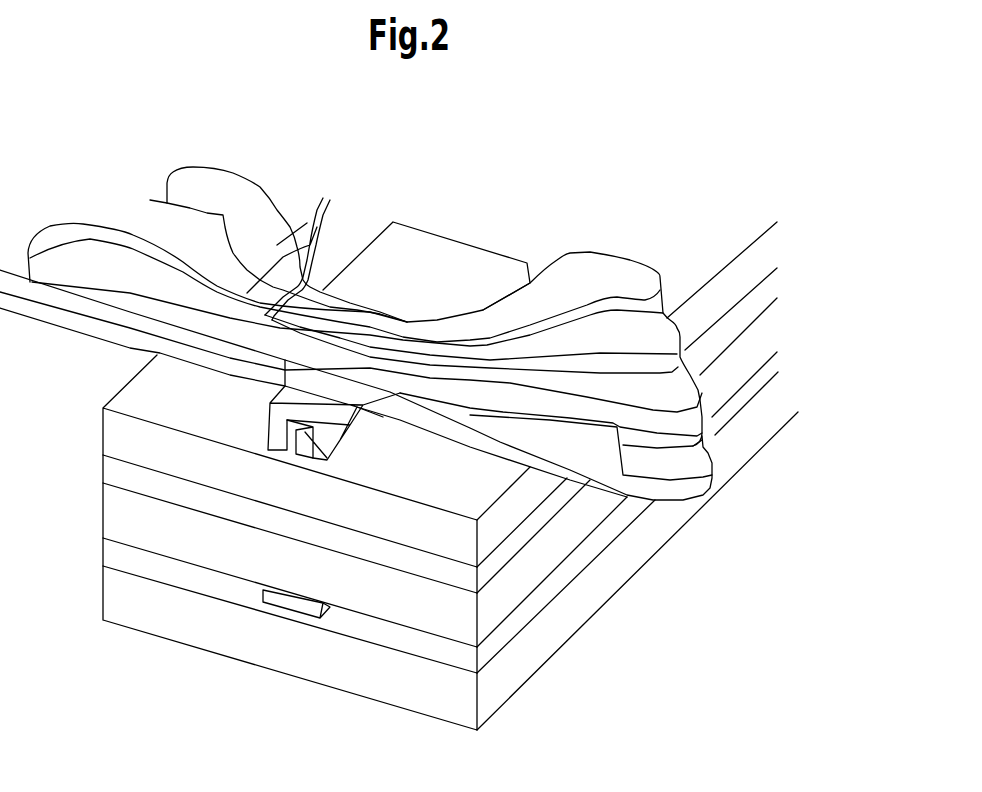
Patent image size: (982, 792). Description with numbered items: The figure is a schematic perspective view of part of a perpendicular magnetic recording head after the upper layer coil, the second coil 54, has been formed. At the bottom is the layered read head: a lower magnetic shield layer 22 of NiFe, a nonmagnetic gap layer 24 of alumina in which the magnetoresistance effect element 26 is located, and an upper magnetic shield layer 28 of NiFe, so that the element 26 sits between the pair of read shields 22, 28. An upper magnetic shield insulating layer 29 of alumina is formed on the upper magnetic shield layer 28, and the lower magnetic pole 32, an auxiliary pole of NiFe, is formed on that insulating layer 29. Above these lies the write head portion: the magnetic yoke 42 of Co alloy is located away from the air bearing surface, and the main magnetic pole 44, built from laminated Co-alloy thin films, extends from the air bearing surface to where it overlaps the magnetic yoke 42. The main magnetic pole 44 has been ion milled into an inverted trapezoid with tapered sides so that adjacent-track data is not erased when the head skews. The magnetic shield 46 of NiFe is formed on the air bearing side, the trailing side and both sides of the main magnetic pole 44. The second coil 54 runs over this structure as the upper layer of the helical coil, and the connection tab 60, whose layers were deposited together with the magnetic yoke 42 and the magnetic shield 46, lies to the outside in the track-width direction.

The lower magnetic shield layer 22 is at (117, 598).
The nonmagnetic gap layer 24 is at (117, 555).
The magnetoresistance effect element 26 is at (300, 608).
The upper magnetic shield layer 28 is at (117, 517).
The upper magnetic shield insulating layer 29 is at (117, 477).
The lower magnetic pole 32 is at (117, 437).
The magnetic yoke 42 is at (457, 257).
The main magnetic pole 44 is at (300, 435).
The magnetic shield 46 is at (345, 432).
The second coil 54 is at (320, 210).
The connection tab 60 is at (30, 263).